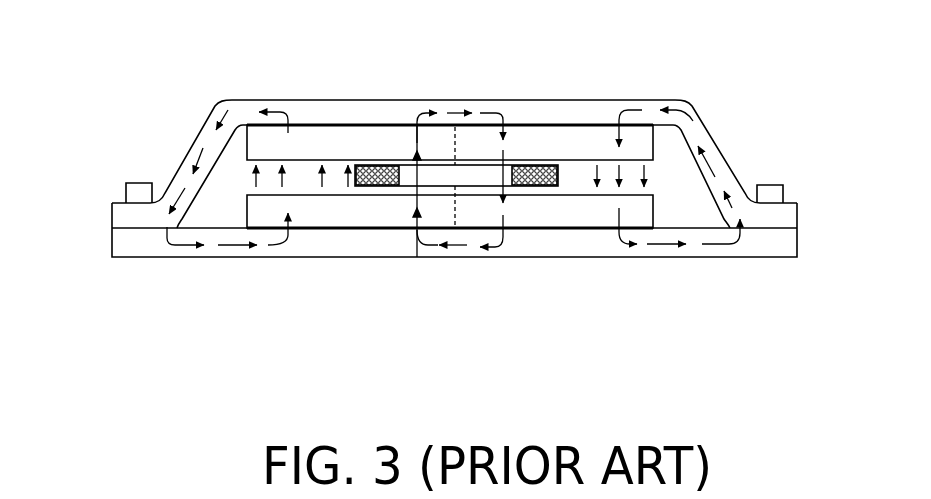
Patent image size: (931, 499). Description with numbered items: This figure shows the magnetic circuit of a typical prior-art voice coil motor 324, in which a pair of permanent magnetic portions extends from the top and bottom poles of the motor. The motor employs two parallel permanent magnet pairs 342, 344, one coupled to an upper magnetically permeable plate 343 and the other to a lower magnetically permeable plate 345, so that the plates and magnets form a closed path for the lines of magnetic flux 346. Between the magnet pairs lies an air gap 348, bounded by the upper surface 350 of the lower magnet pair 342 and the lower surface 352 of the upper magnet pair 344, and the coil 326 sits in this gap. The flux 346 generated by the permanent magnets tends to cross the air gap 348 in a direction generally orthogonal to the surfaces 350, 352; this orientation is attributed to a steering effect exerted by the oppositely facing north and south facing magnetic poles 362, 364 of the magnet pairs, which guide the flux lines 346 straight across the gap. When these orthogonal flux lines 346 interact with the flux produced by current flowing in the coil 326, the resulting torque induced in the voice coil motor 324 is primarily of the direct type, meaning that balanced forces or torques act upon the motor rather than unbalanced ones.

The voice coil motor 324 is at (788, 292).
The coil 326 is at (380, 164).
The lower magnet pair 342 is at (415, 120).
The upper magnetically permeable plate 343 is at (125, 215).
The upper magnet pair 344 is at (320, 237).
The lower magnetically permeable plate 345 is at (143, 242).
The lines of magnetic flux 346 is at (202, 162).
The air gap 348 is at (668, 177).
The upper surface of the lower magnet pair 350 is at (578, 188).
The lower surface of the upper magnet pair 352 is at (295, 158).
The north facing magnetic pole 362 is at (340, 150).
The south facing magnetic pole 364 is at (543, 156).